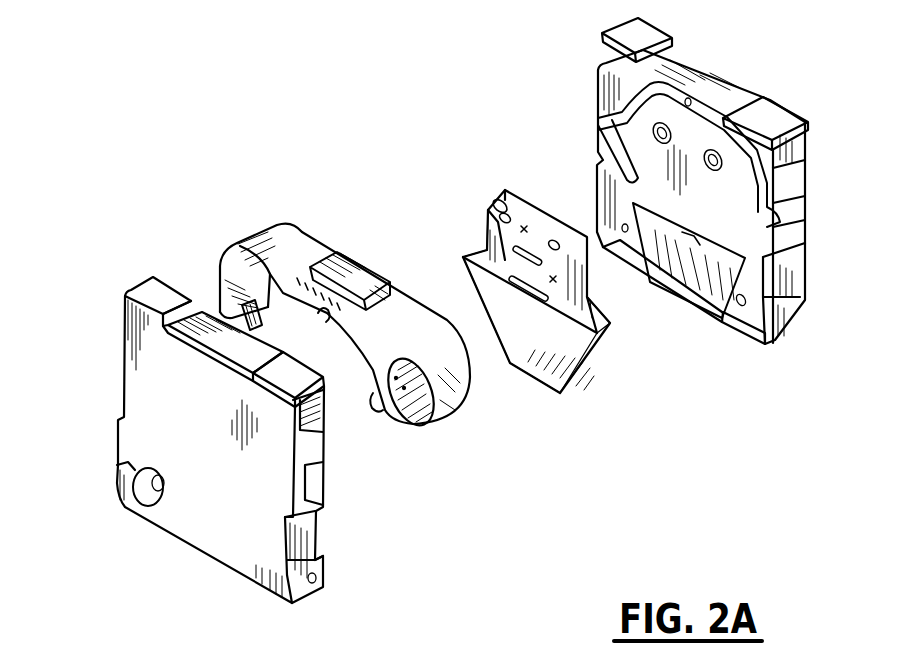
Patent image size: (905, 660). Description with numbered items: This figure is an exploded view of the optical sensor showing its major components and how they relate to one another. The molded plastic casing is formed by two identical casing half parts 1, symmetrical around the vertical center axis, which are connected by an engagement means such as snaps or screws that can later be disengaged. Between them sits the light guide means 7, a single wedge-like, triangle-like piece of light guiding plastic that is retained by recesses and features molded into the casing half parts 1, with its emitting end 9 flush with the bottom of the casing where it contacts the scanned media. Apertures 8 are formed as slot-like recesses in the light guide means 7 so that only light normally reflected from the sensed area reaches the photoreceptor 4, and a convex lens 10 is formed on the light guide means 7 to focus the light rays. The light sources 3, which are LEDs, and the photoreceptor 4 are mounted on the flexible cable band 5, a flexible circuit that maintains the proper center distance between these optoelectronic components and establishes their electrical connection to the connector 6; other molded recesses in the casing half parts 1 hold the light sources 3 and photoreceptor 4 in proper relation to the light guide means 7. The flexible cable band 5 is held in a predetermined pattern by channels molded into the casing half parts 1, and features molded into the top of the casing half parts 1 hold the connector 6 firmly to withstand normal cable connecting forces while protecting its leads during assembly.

The casing half part 1 is at (118, 342).
The light source 3 is at (223, 297).
The photoreceptor 4 is at (326, 325).
The flexible cable band 5 is at (440, 415).
The connector 6 is at (318, 252).
The light guide means 7 is at (570, 370).
The aperture 8 is at (493, 205).
The emitting end 9 is at (537, 387).
The convex lens 10 is at (483, 243).